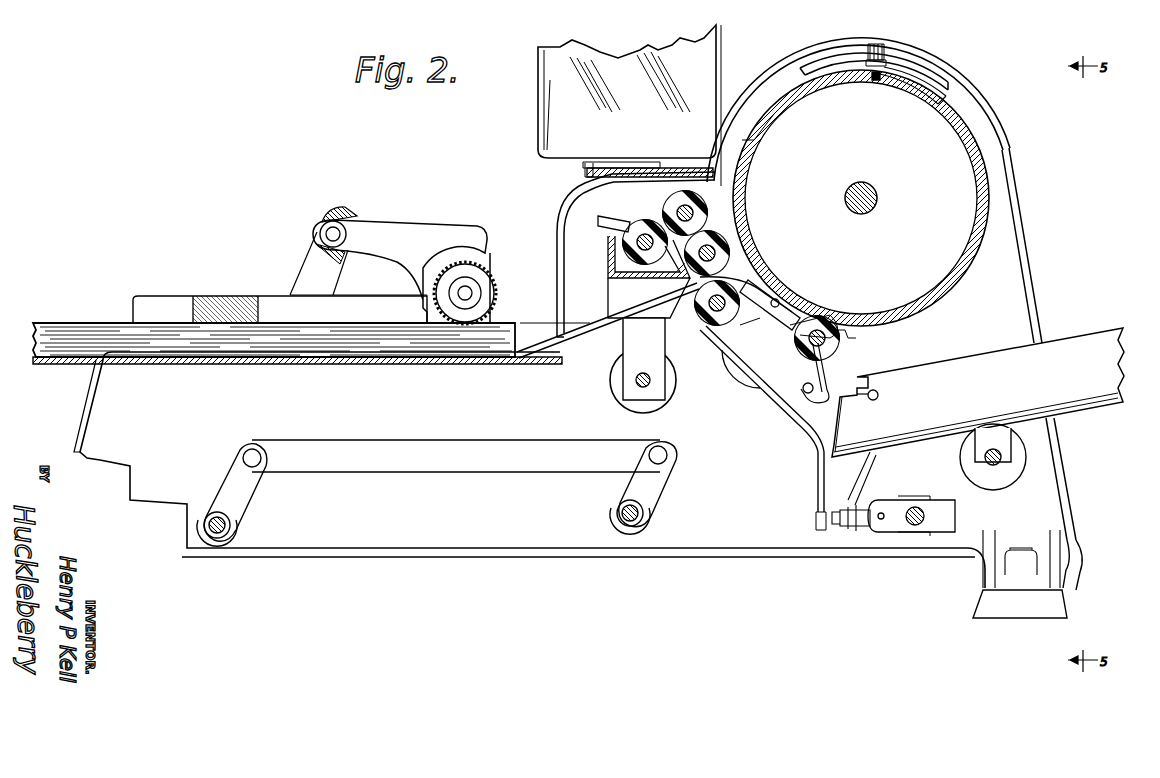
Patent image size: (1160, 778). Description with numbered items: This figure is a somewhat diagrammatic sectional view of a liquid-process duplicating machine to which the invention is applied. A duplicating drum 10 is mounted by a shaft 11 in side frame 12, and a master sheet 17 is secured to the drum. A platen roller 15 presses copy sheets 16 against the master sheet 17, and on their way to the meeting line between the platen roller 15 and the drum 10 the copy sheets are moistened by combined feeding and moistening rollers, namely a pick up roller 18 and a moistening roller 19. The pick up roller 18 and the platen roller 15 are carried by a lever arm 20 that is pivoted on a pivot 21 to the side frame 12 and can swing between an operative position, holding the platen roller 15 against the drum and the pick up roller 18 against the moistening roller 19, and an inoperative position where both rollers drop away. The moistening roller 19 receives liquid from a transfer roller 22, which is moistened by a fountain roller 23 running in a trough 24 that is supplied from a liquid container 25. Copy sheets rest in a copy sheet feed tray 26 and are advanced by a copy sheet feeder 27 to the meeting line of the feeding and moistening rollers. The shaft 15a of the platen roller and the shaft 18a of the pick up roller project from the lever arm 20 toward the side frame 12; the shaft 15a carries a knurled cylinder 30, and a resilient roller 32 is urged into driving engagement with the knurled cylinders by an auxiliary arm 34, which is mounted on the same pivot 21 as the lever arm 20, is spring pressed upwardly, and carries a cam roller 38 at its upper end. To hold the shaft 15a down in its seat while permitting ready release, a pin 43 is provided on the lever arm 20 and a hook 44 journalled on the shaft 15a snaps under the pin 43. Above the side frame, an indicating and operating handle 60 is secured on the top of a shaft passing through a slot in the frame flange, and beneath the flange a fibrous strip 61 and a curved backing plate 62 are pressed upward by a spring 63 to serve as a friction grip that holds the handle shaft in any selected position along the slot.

The duplicating drum 10 is at (806, 90).
The shaft 11 is at (878, 198).
The side frame 12 is at (788, 70).
The platen roller 15 is at (796, 350).
The shaft of the platen roller 15a is at (830, 356).
The copy sheets 16 is at (522, 324).
The master sheet 17 is at (768, 122).
The pick up roller 18 is at (698, 322).
The shaft of the pick up roller 18a is at (726, 325).
The moistening roller 19 is at (740, 258).
The lever arm 20 is at (788, 402).
The pivot 21 is at (868, 400).
The transfer roller 22 is at (670, 196).
The fountain roller 23 is at (628, 222).
The trough 24 is at (612, 258).
The liquid container 25 is at (538, 126).
The copy sheet feed tray 26 is at (478, 364).
The copy sheet feeder 27 is at (410, 222).
The knurled cylinder 30 is at (850, 340).
The resilient roller 32 is at (728, 376).
The auxiliary arm 34 is at (766, 310).
The cam roller 38 is at (802, 322).
The pin 43 is at (800, 388).
The hook 44 is at (818, 372).
The indicating and operating handle 60 is at (870, 40).
The fibrous strip 61 is at (818, 66).
The curved backing plate 62 is at (922, 70).
The spring 63 is at (876, 80).